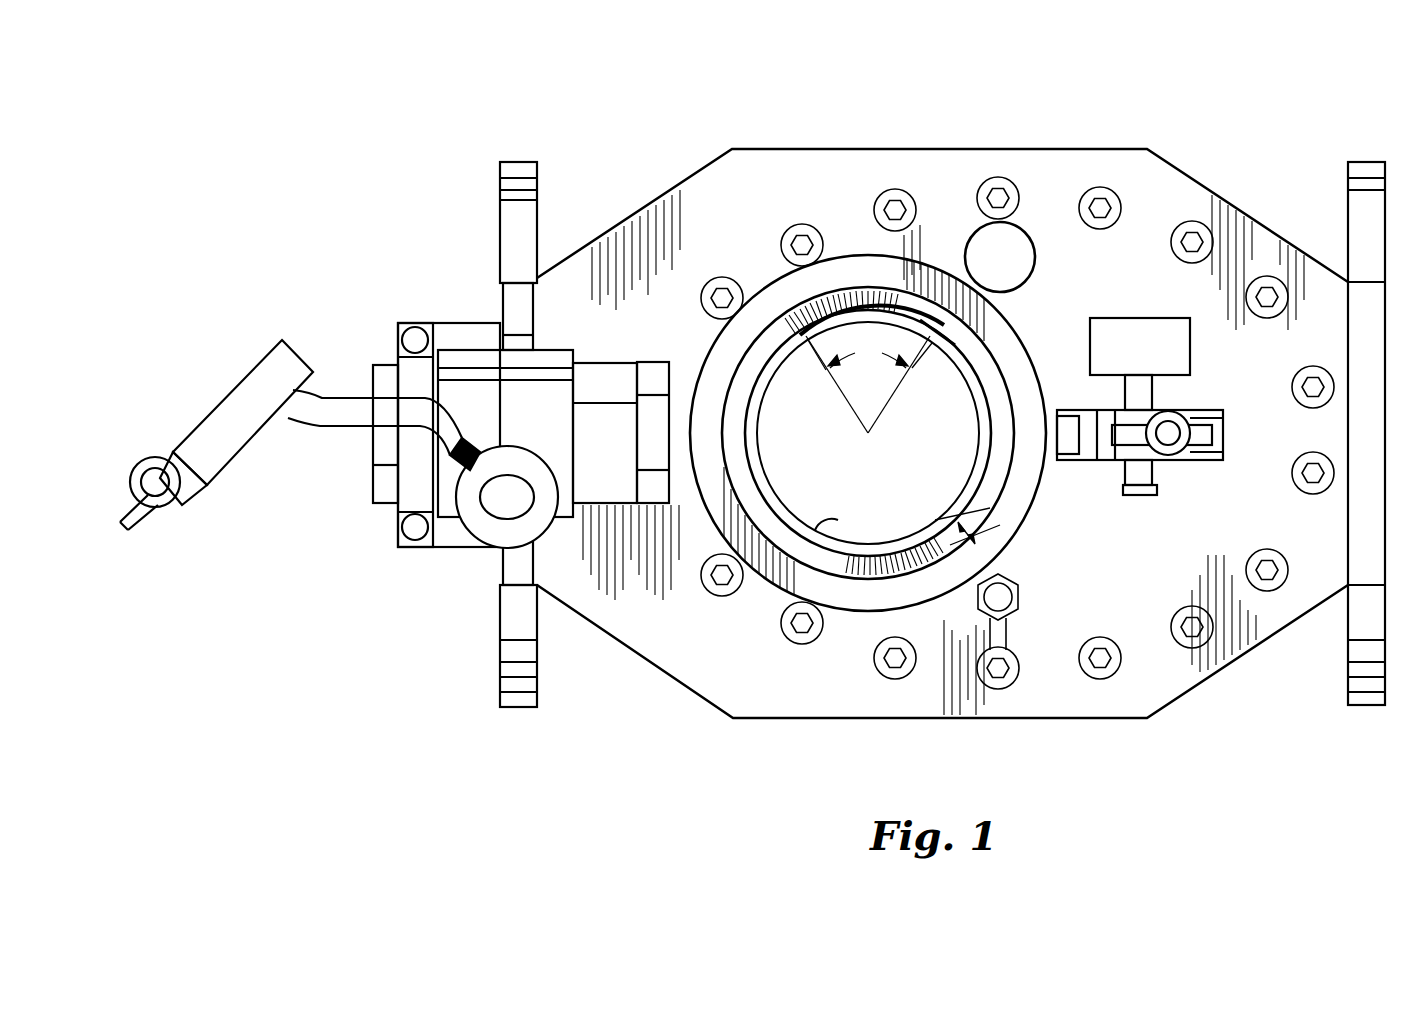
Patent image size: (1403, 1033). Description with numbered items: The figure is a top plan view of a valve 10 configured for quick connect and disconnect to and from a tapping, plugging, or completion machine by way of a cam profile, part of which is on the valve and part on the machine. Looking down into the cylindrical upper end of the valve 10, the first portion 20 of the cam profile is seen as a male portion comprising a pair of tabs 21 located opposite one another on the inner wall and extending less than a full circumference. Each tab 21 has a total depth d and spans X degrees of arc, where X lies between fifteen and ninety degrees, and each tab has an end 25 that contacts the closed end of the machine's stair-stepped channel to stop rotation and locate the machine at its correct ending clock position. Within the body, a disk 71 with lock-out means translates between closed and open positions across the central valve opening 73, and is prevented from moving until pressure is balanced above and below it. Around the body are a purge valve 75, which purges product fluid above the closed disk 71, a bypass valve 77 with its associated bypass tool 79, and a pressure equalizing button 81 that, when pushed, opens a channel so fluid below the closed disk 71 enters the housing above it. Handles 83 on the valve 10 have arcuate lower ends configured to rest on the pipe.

The valve 10 is at (947, 140).
The first portion of cam profile 20 is at (845, 592).
The tabs 21 is at (902, 300).
The end of tab 25 is at (928, 340).
The disk 71 is at (826, 372).
The valve opening 73 is at (815, 530).
The purge valve 75 is at (1170, 450).
The bypass valve 77 is at (478, 522).
The bypass tool 79 is at (205, 415).
The pressure equalizing button 81 is at (1013, 240).
The handles 83 is at (500, 205).
The degrees of arc of tab X is at (869, 384).
The total depth of tab d is at (962, 520).